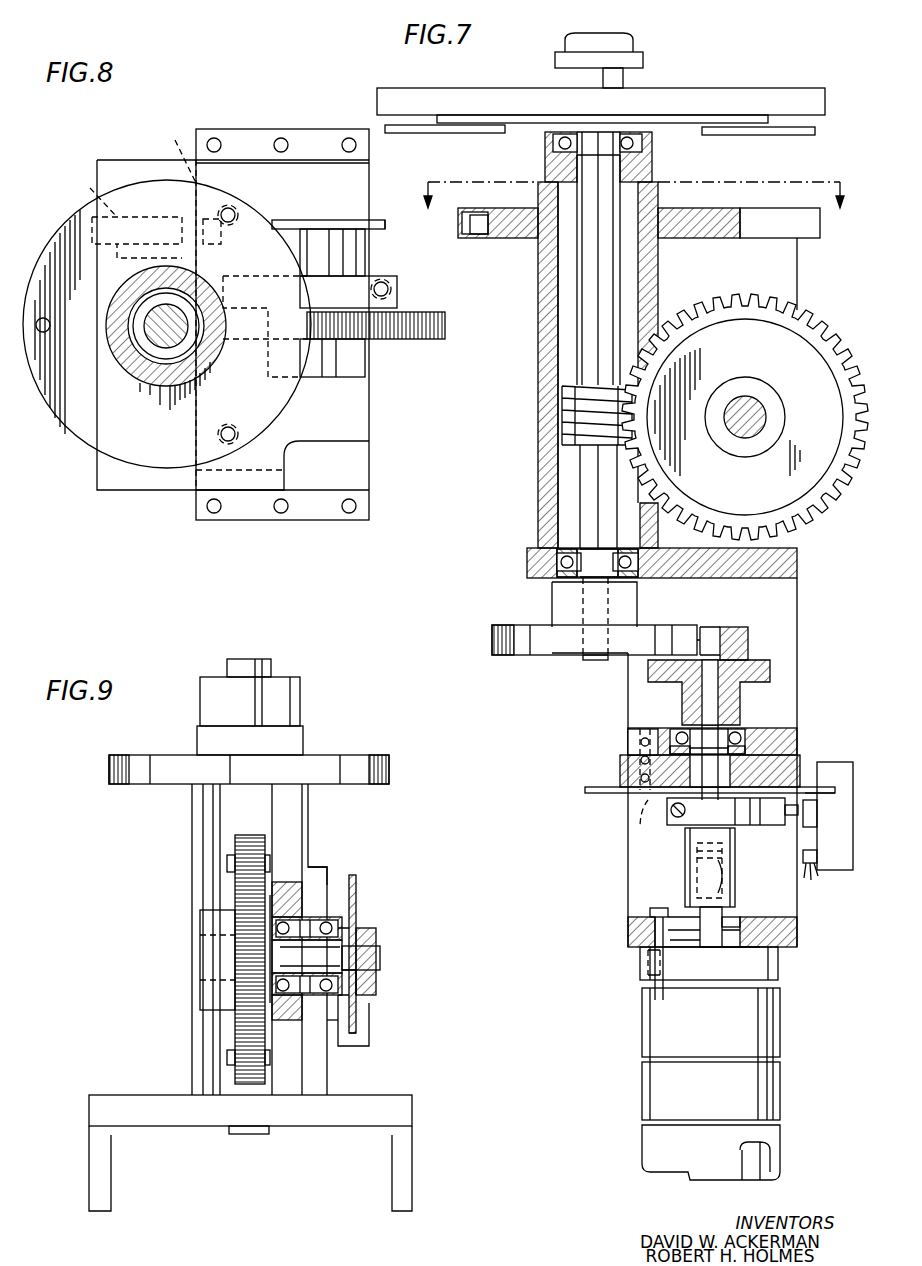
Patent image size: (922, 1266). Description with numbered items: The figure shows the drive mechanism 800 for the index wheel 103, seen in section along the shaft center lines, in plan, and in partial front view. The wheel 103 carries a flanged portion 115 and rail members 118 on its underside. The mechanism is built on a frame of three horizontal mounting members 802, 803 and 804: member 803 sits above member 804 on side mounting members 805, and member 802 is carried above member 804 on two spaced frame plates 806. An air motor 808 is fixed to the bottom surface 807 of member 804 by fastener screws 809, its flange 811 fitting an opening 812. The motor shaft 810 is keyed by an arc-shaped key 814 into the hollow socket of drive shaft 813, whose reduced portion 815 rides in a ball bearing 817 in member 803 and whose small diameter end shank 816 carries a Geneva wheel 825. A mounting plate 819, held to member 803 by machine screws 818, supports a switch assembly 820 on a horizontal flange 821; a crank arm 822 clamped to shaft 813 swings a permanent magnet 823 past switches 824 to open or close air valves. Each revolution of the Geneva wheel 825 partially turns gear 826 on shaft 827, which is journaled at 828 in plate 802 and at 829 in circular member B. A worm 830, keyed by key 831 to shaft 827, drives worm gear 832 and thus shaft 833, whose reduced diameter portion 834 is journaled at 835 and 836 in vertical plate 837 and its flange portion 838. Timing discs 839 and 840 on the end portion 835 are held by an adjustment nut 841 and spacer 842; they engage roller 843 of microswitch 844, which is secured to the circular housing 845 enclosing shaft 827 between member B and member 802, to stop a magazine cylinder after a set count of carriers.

In FIG. 7, the index wheel 103 is at (780, 90).
In FIG. 7, the flanged portion 115 is at (668, 126).
In FIG. 7, the rail members 118 is at (790, 136).
In FIG. 7, the journal 829 is at (547, 162).
In FIG. 7, the circular housing 845 is at (538, 288).
In FIG. 8, the circular housing 845 is at (155, 395).
In FIG. 7, the vertical plate 837 is at (788, 271).
In FIG. 8, the vertical plate 837 is at (397, 280).
In FIG. 9, the vertical plate 837 is at (303, 822).
In FIG. 7, the worm gear 832 is at (834, 342).
In FIG. 8, the worm gear 832 is at (408, 312).
In FIG. 9, the worm gear 832 is at (255, 835).
In FIG. 7, the worm 830 is at (577, 372).
In FIG. 7, the key 831 is at (562, 408).
In FIG. 7, the shaft 827 is at (580, 496).
In FIG. 9, the shaft 827 is at (272, 1130).
In FIG. 7, the drive mechanism 800 is at (512, 567).
In FIG. 9, the drive mechanism 800 is at (152, 714).
In FIG. 7, the horizontal mounting member 802 is at (800, 563).
In FIG. 9, the horizontal mounting member 802 is at (410, 1096).
In FIG. 7, the journal 828 is at (570, 572).
In FIG. 7, the gear 826 is at (492, 641).
In FIG. 7, the Geneva wheel 825 is at (748, 633).
In FIG. 7, the frame plates 806 is at (800, 644).
In FIG. 9, the frame plates 806 is at (414, 1180).
In FIG. 7, the side mounting members 805 is at (797, 912).
In FIG. 7, the small diameter end shank 816 is at (733, 694).
In FIG. 7, the horizontal mounting member 803 is at (800, 738).
In FIG. 7, the reduced portion 815 is at (740, 736).
In FIG. 7, the mounting plate 819 is at (628, 741).
In FIG. 7, the ball bearing 817 is at (800, 760).
In FIG. 7, the horizontal flange 821 is at (836, 790).
In FIG. 7, the switch assembly 820 is at (849, 800).
In FIG. 7, the machine screws 818 is at (636, 809).
In FIG. 7, the crank arm 822 is at (667, 813).
In FIG. 7, the permanent magnet 823 is at (785, 816).
In FIG. 7, the switch 824 is at (817, 858).
In FIG. 7, the drive shaft 813 is at (685, 851).
In FIG. 7, the motor shaft 810 is at (697, 875).
In FIG. 7, the arc-shaped key 814 is at (735, 884).
In FIG. 7, the fastener screws 809 is at (650, 912).
In FIG. 7, the opening 812 is at (740, 926).
In FIG. 7, the horizontal mounting member 804 is at (797, 942).
In FIG. 8, the horizontal mounting member 804 is at (318, 525).
In FIG. 7, the flange 811 is at (760, 950).
In FIG. 7, the bottom surface 807 is at (630, 950).
In FIG. 7, the air motor 808 is at (780, 1031).
In FIG. 8, the roller 843 is at (227, 250).
In FIG. 8, the microswitch 844 is at (136, 216).
In FIG. 8, the timing disc 839 is at (300, 220).
In FIG. 9, the timing disc 839 is at (356, 882).
In FIG. 8, the timing disc 840 is at (385, 220).
In FIG. 9, the timing disc 840 is at (353, 1033).
In FIG. 8, the flange portion 838 is at (365, 253).
In FIG. 9, the flange portion 838 is at (330, 885).
In FIG. 9, the reduced diameter portion 834 is at (342, 918).
In FIG. 9, the shaft 833 is at (307, 956).
In FIG. 9, the end portion 835 is at (380, 958).
In FIG. 9, the adjustment nut 841 is at (376, 926).
In FIG. 9, the spacer 842 is at (376, 983).
In FIG. 9, the journal 836 is at (356, 1020).
In FIG. 7, the member B is at (502, 240).
In FIG. 8, the member B is at (75, 440).
In FIG. 9, the member B is at (138, 784).